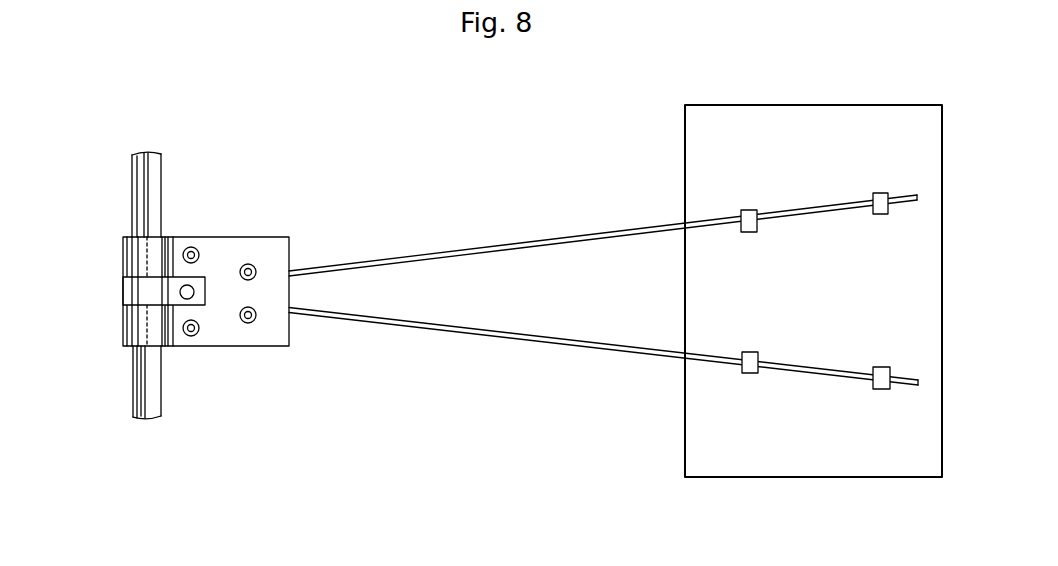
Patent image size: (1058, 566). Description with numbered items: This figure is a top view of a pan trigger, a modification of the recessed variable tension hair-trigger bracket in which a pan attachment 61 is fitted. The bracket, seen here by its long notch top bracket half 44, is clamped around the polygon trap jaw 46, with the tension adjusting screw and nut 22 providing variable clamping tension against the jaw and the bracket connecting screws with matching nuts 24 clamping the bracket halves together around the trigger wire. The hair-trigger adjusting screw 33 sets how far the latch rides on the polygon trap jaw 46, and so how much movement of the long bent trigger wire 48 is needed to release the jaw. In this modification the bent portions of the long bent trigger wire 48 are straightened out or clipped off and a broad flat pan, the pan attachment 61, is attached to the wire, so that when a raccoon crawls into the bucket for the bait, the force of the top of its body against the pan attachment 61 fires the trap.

The tension adjusting screw and nut 22 is at (183, 254).
The bracket connecting screws with matching nuts 24 is at (252, 279).
The hair-trigger adjusting screw 33 is at (185, 289).
The long notch top bracket half 44 is at (257, 236).
The polygon trap jaw 46 is at (140, 200).
The long bent trigger wire 48 is at (507, 246).
The pan attachment 61 is at (685, 170).